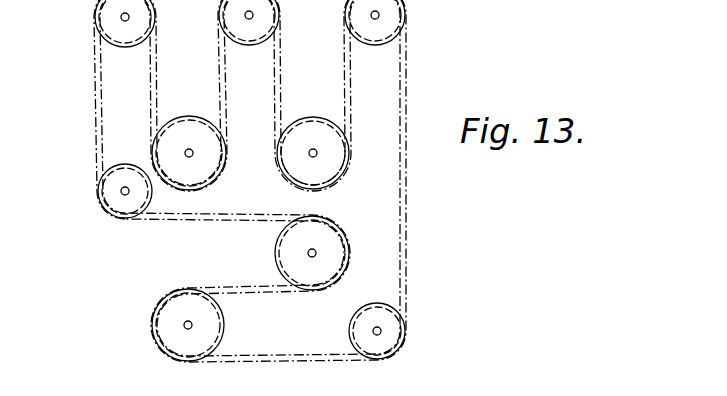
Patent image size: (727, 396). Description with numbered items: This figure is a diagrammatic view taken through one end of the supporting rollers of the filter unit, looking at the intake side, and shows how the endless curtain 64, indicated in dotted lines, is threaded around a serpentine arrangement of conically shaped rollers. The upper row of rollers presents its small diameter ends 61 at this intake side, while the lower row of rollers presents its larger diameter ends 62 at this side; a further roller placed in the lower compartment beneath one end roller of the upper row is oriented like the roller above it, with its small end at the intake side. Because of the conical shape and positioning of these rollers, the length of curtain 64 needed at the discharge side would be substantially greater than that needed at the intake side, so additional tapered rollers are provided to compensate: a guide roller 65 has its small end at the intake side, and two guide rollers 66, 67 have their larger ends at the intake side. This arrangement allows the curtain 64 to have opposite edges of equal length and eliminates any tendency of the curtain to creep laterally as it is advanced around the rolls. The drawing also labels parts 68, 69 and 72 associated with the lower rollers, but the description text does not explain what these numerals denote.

The small diameter ends 61 is at (107, 22).
The larger diameter ends 62 is at (112, 180).
The endless curtain 64 is at (407, 158).
The guide roller 65 is at (397, 311).
The guide roller 66 is at (332, 218).
The guide roller 67 is at (186, 290).
The pulley groove 68 is at (290, 256).
The pulley 69 is at (167, 336).
The pulley groove 72 is at (364, 324).